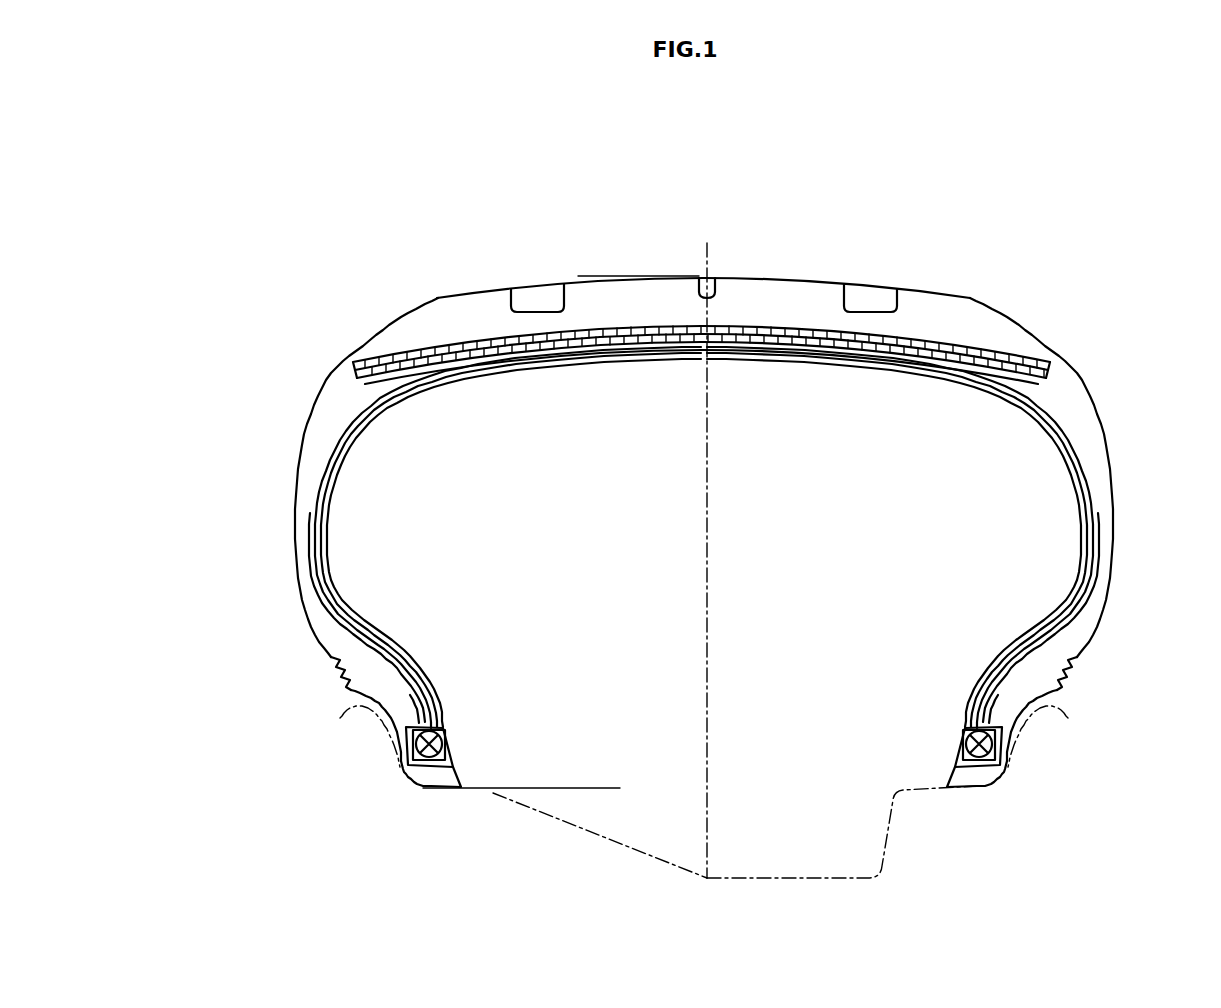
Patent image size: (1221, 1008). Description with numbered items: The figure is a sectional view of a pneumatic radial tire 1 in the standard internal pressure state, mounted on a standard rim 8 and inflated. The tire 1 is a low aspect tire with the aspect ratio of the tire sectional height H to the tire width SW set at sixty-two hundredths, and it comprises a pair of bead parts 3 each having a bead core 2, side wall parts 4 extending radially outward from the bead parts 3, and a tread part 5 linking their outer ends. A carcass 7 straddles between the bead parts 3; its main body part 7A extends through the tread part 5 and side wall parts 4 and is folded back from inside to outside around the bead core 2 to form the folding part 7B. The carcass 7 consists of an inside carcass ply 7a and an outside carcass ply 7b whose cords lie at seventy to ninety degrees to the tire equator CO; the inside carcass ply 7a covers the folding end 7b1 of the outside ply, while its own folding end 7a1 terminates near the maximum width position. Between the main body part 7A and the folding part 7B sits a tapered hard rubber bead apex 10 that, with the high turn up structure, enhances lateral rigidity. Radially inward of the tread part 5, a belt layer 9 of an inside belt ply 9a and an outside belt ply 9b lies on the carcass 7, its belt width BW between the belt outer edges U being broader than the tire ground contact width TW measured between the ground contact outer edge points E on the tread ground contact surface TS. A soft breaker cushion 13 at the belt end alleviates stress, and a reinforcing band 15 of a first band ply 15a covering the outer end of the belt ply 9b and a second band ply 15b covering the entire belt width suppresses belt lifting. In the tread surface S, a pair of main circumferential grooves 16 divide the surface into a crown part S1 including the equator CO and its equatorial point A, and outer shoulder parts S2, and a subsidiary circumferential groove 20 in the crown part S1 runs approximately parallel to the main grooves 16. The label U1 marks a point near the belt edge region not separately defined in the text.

The pneumatic radial tire 1 is at (222, 403).
The bead core 2 is at (992, 740).
The bead part 3 is at (1022, 780).
The side wall part 4 is at (1124, 595).
The tread part 5 is at (821, 272).
The carcass 7 is at (900, 537).
The inside carcass ply 7a is at (1080, 450).
The outside carcass ply 7b is at (1087, 470).
The main body part 7A is at (1073, 582).
The folding part 7B is at (1077, 657).
The folding end of inside carcass ply 7a1 is at (1085, 513).
The folding end of outside carcass ply 7b1 is at (1025, 693).
The standard rim 8 is at (887, 840).
The belt layer 9 is at (701, 430).
The inside belt ply 9a is at (752, 347).
The outside belt ply 9b is at (783, 342).
The bead apex 10 is at (975, 690).
The breaker cushion 13 is at (1050, 385).
The reinforcing band 15 is at (701, 387).
The first band ply 15a is at (927, 365).
The second band ply 15b is at (962, 375).
The main circumferential groove 16 is at (540, 283).
The subsidiary circumferential groove 20 is at (703, 285).
The tire width SW is at (1115, 553).
The belt width BW is at (1025, 353).
The tire ground contact width TW is at (970, 298).
The tire sectional height H is at (586, 280).
The tread surface S is at (603, 277).
The crown part S1 is at (727, 278).
The shoulder part S2 is at (475, 292).
The tread ground contact surface TS is at (835, 280).
The tire equator CO is at (695, 255).
The tire's equatorial point A is at (718, 285).
The ground contact outer edge point E is at (985, 287).
The belt outer edge U is at (1041, 340).
The point U1 is at (1064, 365).